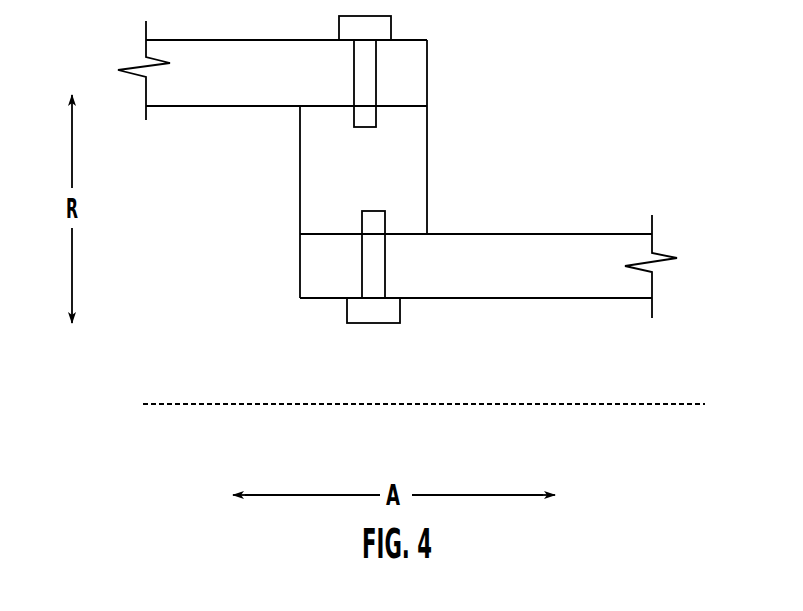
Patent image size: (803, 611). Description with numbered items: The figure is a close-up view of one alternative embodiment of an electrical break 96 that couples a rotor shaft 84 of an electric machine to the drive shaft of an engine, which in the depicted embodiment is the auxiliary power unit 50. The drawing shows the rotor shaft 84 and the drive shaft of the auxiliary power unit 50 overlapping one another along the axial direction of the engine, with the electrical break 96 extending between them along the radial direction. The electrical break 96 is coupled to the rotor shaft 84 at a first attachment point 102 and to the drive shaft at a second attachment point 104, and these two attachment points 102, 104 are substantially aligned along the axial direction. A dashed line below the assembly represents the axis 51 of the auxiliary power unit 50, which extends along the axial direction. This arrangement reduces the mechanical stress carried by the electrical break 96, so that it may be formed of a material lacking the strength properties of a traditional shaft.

The rotor shaft 84 is at (222, 70).
The electrical break 96 is at (425, 165).
The first attachment point 102 is at (392, 115).
The second attachment point 104 is at (350, 217).
The auxiliary power unit 50 is at (562, 244).
The axis 51 is at (651, 404).